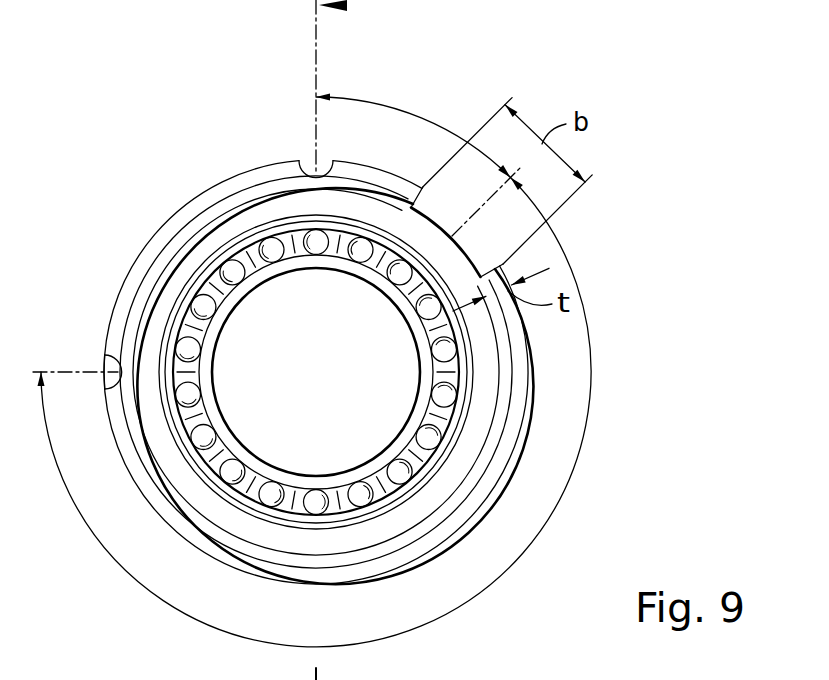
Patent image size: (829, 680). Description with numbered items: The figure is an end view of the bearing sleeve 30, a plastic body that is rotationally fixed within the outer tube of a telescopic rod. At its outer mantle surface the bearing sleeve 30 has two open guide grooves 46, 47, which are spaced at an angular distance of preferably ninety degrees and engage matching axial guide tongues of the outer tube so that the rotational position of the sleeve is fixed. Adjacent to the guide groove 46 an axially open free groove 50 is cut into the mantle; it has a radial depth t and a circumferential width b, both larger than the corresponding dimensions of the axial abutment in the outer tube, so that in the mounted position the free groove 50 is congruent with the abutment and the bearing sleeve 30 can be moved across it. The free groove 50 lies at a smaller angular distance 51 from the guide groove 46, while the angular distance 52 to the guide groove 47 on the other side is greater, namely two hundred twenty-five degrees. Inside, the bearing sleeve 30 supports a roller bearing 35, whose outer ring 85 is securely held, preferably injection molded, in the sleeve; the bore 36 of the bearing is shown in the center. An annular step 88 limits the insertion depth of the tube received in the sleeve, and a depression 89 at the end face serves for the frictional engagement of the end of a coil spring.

The bearing sleeve 30 is at (122, 266).
The roller bearing 35 is at (274, 286).
The bore 36 is at (210, 345).
The guide groove 46 is at (311, 163).
The guide groove 47 is at (108, 362).
The free groove 50 is at (437, 218).
The angular distance 51 is at (386, 104).
The angular distance 52 is at (583, 453).
The outer ring 85 is at (272, 241).
The annular step 88 is at (200, 488).
The depression 89 is at (200, 243).